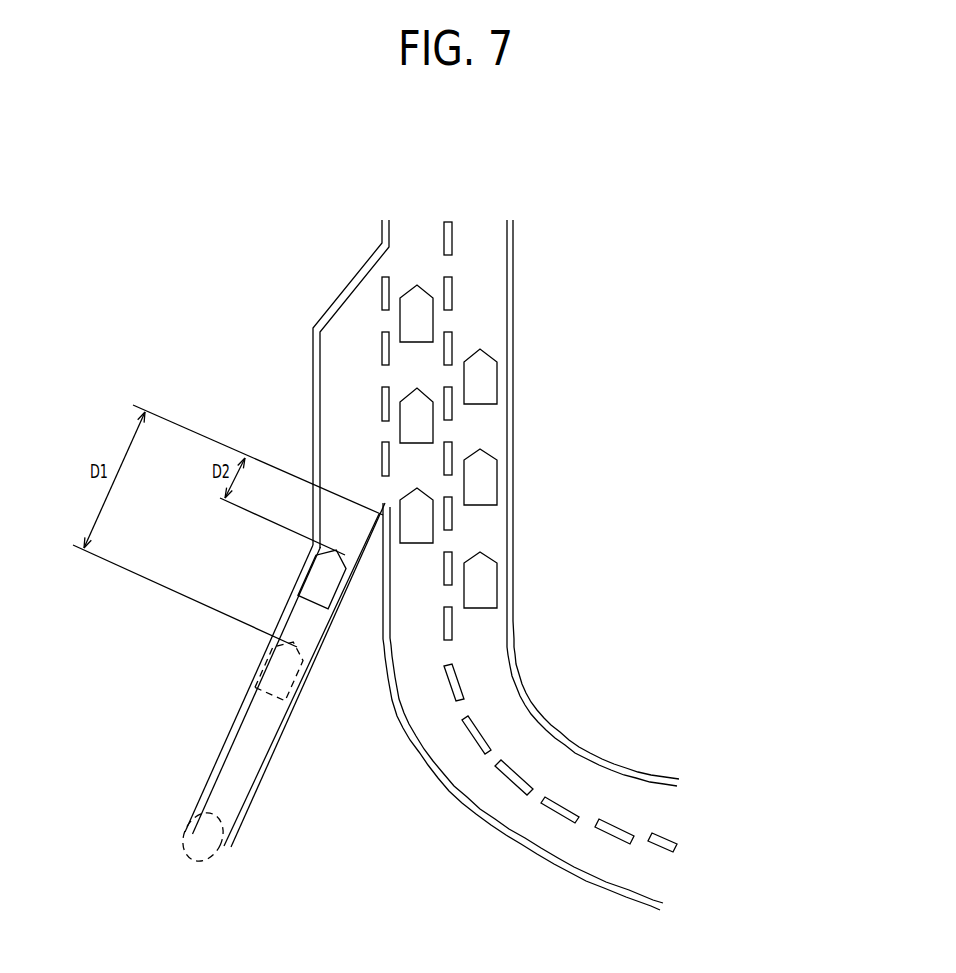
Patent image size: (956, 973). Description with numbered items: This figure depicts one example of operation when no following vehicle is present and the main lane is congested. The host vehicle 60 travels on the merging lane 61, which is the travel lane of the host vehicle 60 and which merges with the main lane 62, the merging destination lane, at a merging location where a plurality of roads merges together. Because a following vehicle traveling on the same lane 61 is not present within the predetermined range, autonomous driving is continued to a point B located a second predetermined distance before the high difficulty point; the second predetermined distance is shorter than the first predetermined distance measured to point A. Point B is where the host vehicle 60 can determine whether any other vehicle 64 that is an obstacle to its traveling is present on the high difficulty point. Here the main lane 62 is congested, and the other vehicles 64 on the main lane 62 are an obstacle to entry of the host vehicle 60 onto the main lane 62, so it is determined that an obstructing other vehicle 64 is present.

The host vehicle 60 is at (325, 573).
The merging lane 61 is at (243, 748).
The main lane 62 is at (483, 653).
The other vehicle 64 is at (433, 317).